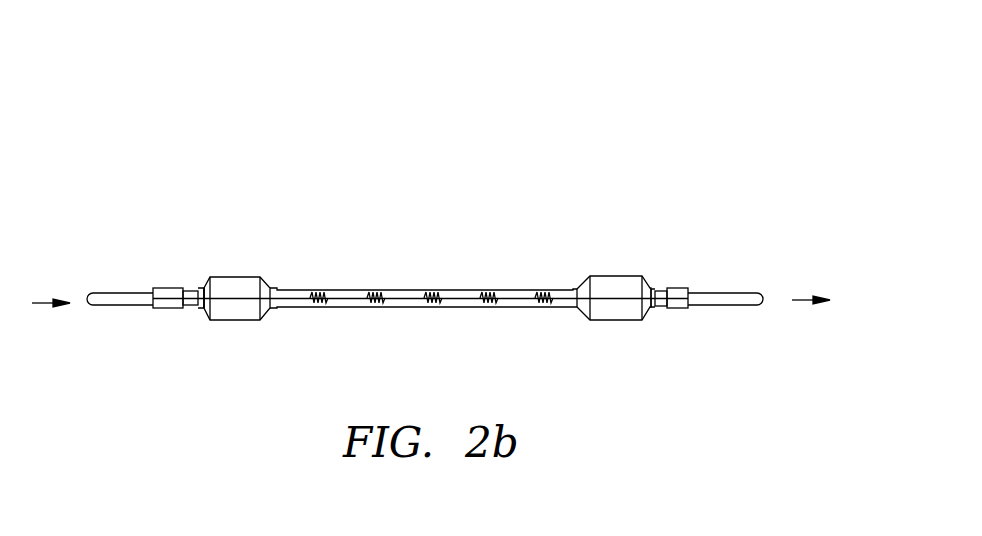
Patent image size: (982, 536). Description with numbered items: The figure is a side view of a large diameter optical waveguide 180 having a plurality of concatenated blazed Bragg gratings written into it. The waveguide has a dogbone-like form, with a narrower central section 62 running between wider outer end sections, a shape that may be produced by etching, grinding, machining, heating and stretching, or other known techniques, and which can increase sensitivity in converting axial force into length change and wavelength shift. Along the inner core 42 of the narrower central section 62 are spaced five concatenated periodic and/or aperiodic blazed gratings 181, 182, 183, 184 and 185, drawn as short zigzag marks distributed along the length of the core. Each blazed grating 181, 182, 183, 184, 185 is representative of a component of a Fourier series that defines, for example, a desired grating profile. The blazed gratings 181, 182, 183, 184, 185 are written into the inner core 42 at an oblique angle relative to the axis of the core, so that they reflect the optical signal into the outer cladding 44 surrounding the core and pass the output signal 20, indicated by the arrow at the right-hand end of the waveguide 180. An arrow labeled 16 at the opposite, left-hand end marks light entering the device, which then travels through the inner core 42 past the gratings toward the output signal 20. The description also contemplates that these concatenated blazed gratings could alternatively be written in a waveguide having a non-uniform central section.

The large diameter optical waveguide 180 is at (425, 267).
The narrower central section 62 is at (400, 290).
The inner core 42 is at (602, 290).
The outer cladding 44 is at (618, 312).
The blazed grating 181 is at (317, 307).
The blazed grating 182 is at (372, 307).
The blazed grating 183 is at (430, 307).
The blazed grating 184 is at (485, 307).
The blazed grating 185 is at (542, 307).
The input light 16 is at (40, 303).
The output signal 20 is at (800, 302).